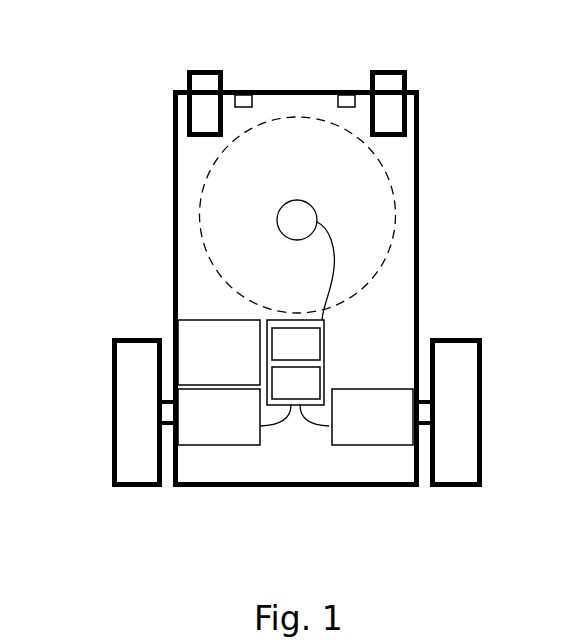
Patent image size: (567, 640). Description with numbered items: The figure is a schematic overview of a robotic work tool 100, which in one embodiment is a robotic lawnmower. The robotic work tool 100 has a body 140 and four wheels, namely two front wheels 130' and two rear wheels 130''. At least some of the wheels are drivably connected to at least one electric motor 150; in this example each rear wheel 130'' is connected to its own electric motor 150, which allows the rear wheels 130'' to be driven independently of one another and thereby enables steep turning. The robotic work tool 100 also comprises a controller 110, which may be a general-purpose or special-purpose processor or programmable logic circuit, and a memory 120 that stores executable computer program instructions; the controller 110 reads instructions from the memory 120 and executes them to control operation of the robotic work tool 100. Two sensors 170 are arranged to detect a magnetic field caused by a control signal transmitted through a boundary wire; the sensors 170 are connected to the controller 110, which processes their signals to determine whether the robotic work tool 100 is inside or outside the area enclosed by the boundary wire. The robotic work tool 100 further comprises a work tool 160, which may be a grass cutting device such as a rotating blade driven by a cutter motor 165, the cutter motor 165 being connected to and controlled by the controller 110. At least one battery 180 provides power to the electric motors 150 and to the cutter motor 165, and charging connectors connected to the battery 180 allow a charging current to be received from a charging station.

The robotic work tool 100 is at (173, 137).
The controller 110 is at (324, 342).
The memory 120 is at (323, 383).
The front wheels 130' is at (355, 131).
The rear wheels 130'' is at (258, 460).
The body 140 is at (195, 487).
The electric motor 150 is at (337, 427).
The work tool 160 is at (207, 257).
The cutter motor 165 is at (277, 222).
The sensor 170 is at (325, 90).
The battery 180 is at (190, 342).